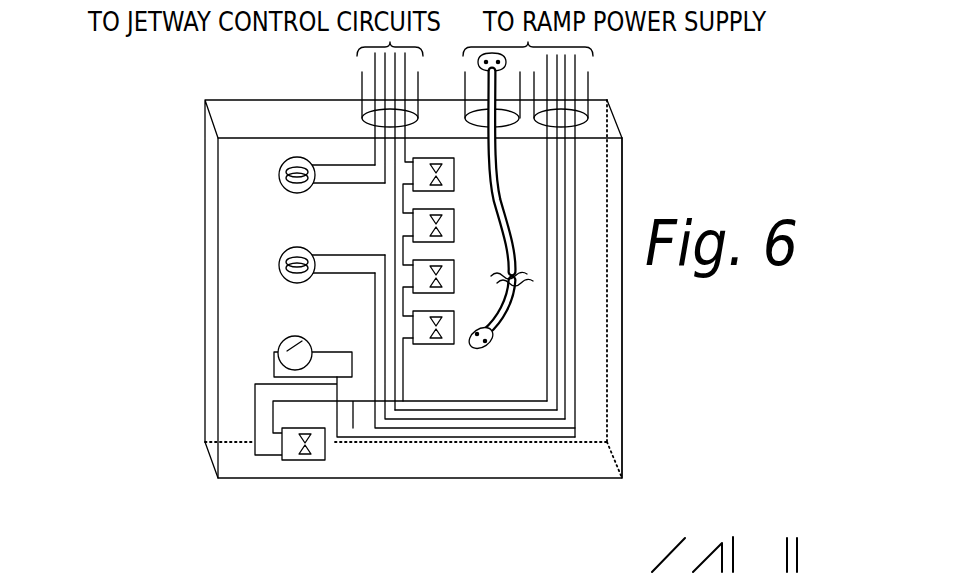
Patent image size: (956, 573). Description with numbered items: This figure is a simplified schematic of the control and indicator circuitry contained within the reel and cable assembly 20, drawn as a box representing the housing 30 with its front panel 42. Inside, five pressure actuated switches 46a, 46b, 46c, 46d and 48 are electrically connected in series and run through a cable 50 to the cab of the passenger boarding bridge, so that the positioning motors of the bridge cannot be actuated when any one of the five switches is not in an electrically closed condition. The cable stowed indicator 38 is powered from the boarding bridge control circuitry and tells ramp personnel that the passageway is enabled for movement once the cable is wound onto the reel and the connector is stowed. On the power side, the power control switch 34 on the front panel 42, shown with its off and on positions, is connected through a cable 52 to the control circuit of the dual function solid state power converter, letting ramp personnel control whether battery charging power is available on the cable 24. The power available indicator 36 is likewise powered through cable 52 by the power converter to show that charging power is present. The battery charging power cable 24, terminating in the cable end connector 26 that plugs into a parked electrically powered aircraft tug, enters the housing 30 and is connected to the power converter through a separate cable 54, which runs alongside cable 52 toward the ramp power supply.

The reel and cable assembly 20 is at (619, 151).
The cable 24 is at (514, 242).
The cable end connector 26 is at (477, 348).
The housing 30 is at (612, 334).
The power switch 34 is at (278, 345).
The power available indicator 36 is at (280, 257).
The cable stowed indicator 38 is at (278, 177).
The front panel 42 is at (588, 385).
The pressure actuated switch 46a is at (427, 175).
The pressure actuated switch 46b is at (413, 222).
The pressure actuated switch 46c is at (423, 279).
The pressure actuated switch 46d is at (415, 336).
The pressure actuated switch 48 is at (295, 446).
The cable 50 is at (362, 80).
The cable 52 is at (577, 68).
The cable 54 is at (502, 92).